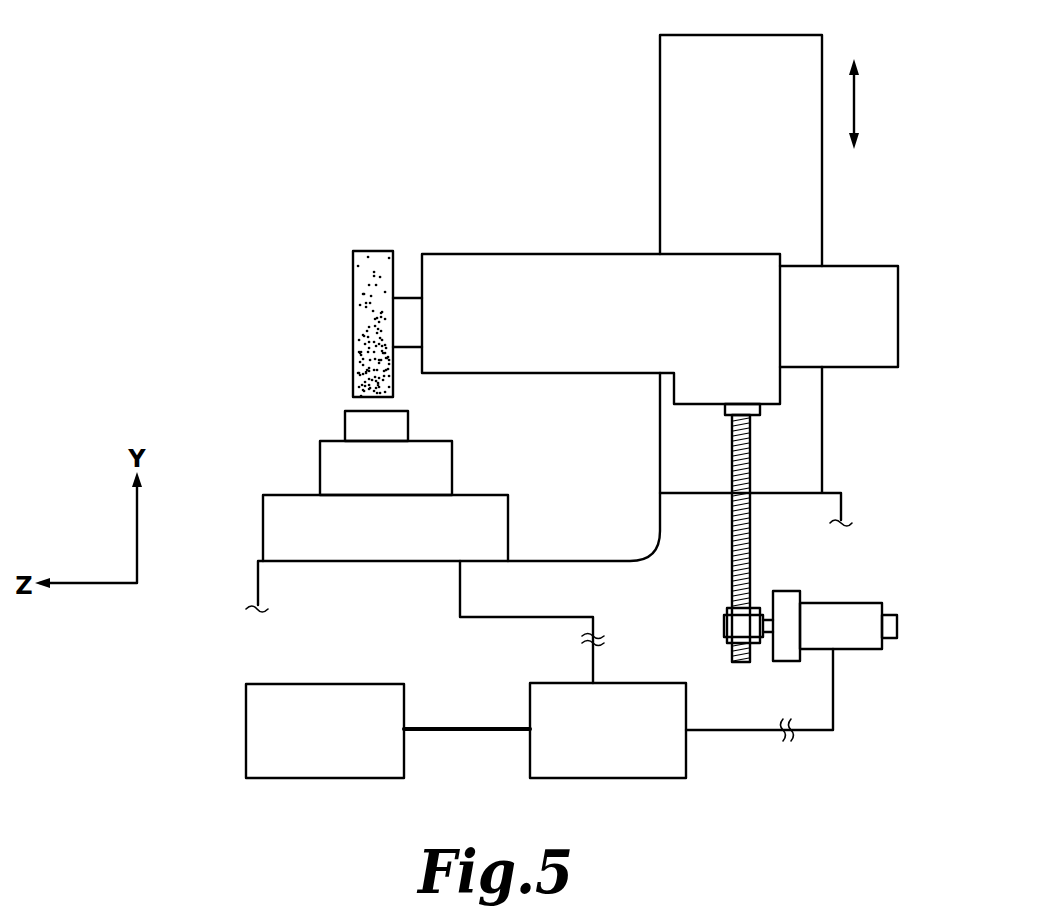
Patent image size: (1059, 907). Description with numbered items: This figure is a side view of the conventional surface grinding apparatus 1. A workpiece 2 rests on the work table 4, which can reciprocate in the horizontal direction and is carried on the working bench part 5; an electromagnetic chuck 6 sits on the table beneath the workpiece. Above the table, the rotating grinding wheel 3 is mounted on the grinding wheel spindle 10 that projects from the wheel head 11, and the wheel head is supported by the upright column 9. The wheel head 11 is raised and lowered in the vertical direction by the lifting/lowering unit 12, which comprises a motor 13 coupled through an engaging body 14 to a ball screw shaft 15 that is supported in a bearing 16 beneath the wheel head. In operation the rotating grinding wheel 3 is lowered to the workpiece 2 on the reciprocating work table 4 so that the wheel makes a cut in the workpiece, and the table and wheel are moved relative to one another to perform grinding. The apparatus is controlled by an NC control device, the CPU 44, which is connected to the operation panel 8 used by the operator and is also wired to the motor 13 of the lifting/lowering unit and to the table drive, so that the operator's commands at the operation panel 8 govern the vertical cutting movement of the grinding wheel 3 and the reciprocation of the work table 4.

The surface grinding apparatus 1 is at (459, 82).
The workpiece 2 is at (350, 421).
The grinding wheel 3 is at (360, 307).
The work table 4 is at (268, 522).
The working bench part 5 is at (245, 556).
The electromagnetic chuck 6 is at (328, 461).
The operation panel 8 is at (336, 686).
The column 9 is at (660, 63).
The grinding wheel spindle 10 is at (521, 317).
The wheel head 11 is at (405, 297).
The lifting/lowering unit 12 is at (719, 533).
The motor 13 is at (855, 606).
The engaging body 14 is at (724, 626).
The ball screw shaft 15 is at (752, 543).
The bearing 16 is at (762, 410).
The NC control device (CPU) 44 is at (535, 700).